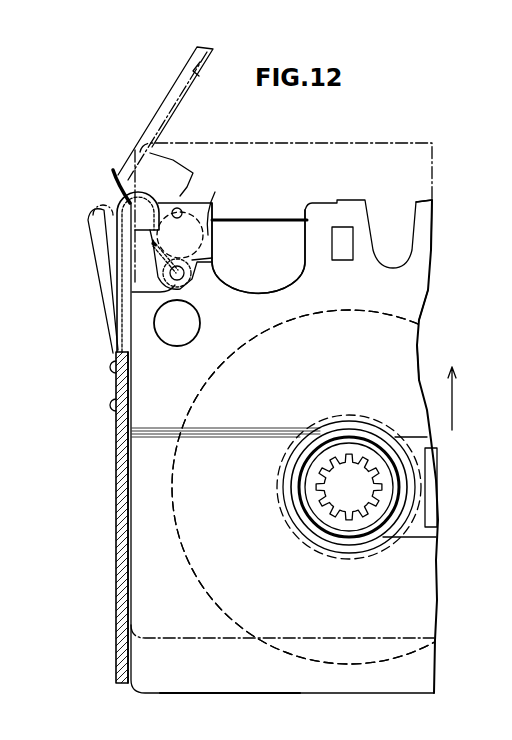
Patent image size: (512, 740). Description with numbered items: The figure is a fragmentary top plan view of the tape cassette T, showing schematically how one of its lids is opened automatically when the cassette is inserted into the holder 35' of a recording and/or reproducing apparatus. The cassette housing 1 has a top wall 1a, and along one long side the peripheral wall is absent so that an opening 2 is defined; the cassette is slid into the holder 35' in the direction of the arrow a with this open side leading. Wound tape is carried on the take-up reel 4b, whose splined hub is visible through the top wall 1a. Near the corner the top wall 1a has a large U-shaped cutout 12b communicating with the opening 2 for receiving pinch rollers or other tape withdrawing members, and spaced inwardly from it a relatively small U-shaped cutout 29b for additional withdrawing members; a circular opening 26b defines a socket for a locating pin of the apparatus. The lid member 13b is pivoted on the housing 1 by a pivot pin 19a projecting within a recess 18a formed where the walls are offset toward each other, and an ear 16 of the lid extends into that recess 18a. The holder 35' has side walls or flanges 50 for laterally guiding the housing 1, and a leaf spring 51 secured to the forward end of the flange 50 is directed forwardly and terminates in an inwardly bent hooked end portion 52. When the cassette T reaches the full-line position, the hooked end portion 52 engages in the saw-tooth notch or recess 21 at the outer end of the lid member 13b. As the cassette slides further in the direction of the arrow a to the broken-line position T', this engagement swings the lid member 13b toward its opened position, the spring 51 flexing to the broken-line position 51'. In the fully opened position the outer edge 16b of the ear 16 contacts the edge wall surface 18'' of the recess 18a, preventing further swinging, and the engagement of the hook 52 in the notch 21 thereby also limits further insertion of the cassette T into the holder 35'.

The cassette housing 1 is at (451, 579).
The top wall 1a is at (205, 688).
The opening 2 is at (425, 184).
The take-up reel 4b is at (408, 657).
The U-shaped cutout 12b is at (295, 258).
The lid member 13b is at (172, 95).
The ear 16 is at (221, 200).
The outer edge of ear 16b is at (147, 253).
The recess 18a is at (143, 270).
The edge wall surface 18'' is at (112, 302).
The pivot pin 19a is at (188, 279).
The notch or recess 21 is at (158, 207).
The circular opening 26b is at (176, 345).
The small U-shaped cutout 29b is at (412, 250).
The holder 35' is at (84, 517).
The side walls or flanges 50 is at (118, 445).
The leaf spring 51 is at (77, 281).
The flexed leaf spring position 51' is at (73, 207).
The hooked end portion 52 is at (113, 172).
The tape cassette T is at (434, 336).
The inserted cassette position T' is at (286, 151).
The arrow a is at (453, 397).